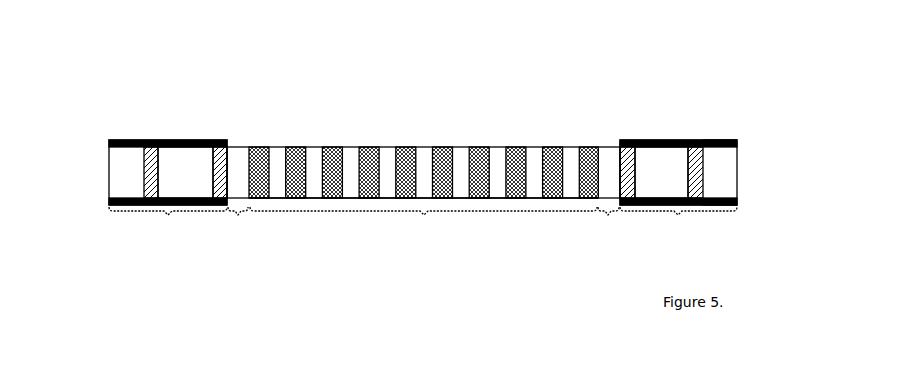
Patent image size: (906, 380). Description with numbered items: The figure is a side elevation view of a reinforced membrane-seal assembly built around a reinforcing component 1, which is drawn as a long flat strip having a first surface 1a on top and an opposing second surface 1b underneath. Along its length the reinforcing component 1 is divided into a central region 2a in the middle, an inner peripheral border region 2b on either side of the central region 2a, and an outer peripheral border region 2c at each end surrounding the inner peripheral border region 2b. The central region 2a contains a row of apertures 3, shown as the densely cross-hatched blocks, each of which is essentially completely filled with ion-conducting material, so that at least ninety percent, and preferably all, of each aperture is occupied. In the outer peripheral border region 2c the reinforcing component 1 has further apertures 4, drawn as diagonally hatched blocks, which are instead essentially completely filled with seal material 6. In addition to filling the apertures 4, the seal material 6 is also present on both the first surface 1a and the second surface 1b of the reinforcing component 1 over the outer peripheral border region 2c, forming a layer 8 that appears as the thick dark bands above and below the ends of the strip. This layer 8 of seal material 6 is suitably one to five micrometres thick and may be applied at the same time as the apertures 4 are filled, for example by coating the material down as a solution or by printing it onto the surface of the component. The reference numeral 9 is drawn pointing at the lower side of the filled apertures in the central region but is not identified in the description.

The reinforcing component 1 is at (770, 169).
The first surface 1a is at (740, 117).
The second surface 1b is at (745, 214).
The central region 2a is at (423, 197).
The inner peripheral border region 2b is at (423, 227).
The outer peripheral border region 2c is at (423, 227).
The aperture 3 is at (345, 125).
The aperture 4 is at (128, 120).
The seal material 6 is at (122, 152).
The layer 8 is at (160, 113).
The gaps between segments 9 is at (352, 207).